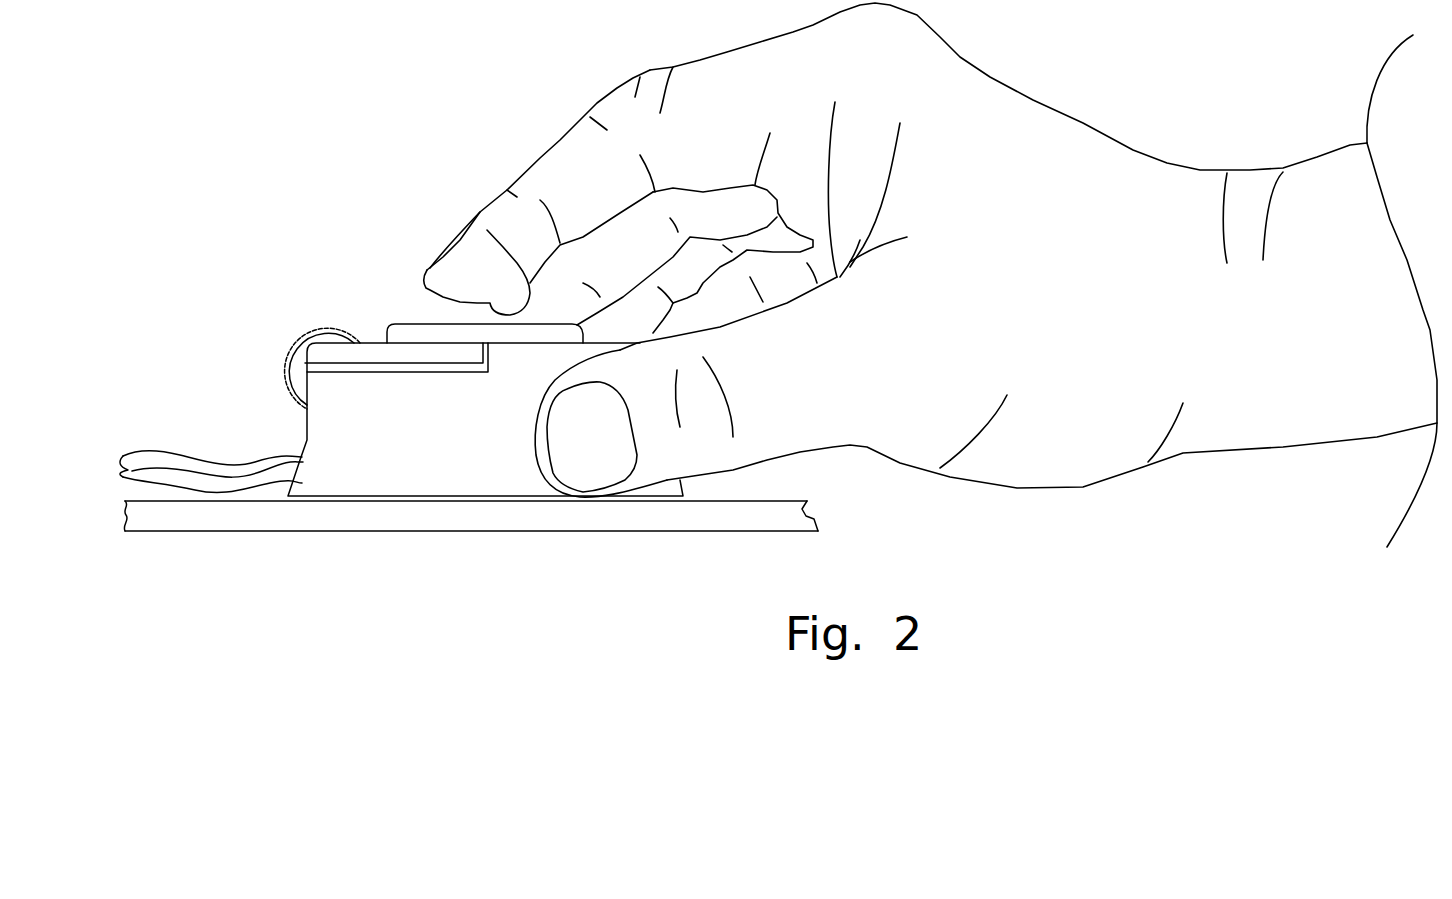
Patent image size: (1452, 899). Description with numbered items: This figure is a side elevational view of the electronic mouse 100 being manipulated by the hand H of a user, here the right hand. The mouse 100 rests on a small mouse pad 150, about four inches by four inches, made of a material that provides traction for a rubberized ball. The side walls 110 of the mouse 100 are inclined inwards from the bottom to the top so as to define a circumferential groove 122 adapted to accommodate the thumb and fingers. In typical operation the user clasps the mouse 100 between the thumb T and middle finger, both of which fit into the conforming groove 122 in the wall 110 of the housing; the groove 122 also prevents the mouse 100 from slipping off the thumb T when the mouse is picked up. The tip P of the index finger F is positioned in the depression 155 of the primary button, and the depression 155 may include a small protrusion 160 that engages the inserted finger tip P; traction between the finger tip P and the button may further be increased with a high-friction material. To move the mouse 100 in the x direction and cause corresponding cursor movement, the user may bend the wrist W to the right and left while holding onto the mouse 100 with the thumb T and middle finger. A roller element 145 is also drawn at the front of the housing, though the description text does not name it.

The electronic mouse 100 is at (317, 498).
The side walls 110 is at (293, 428).
The circumferential groove 122 is at (303, 447).
The roller 145 is at (293, 336).
The mouse pad 150 is at (473, 533).
The depression 155 is at (430, 322).
The small protrusion 160 is at (425, 280).
The tip of the index finger P is at (500, 243).
The index finger F is at (595, 186).
The hand H is at (1028, 218).
The thumb T is at (808, 401).
The wrist W is at (1208, 160).